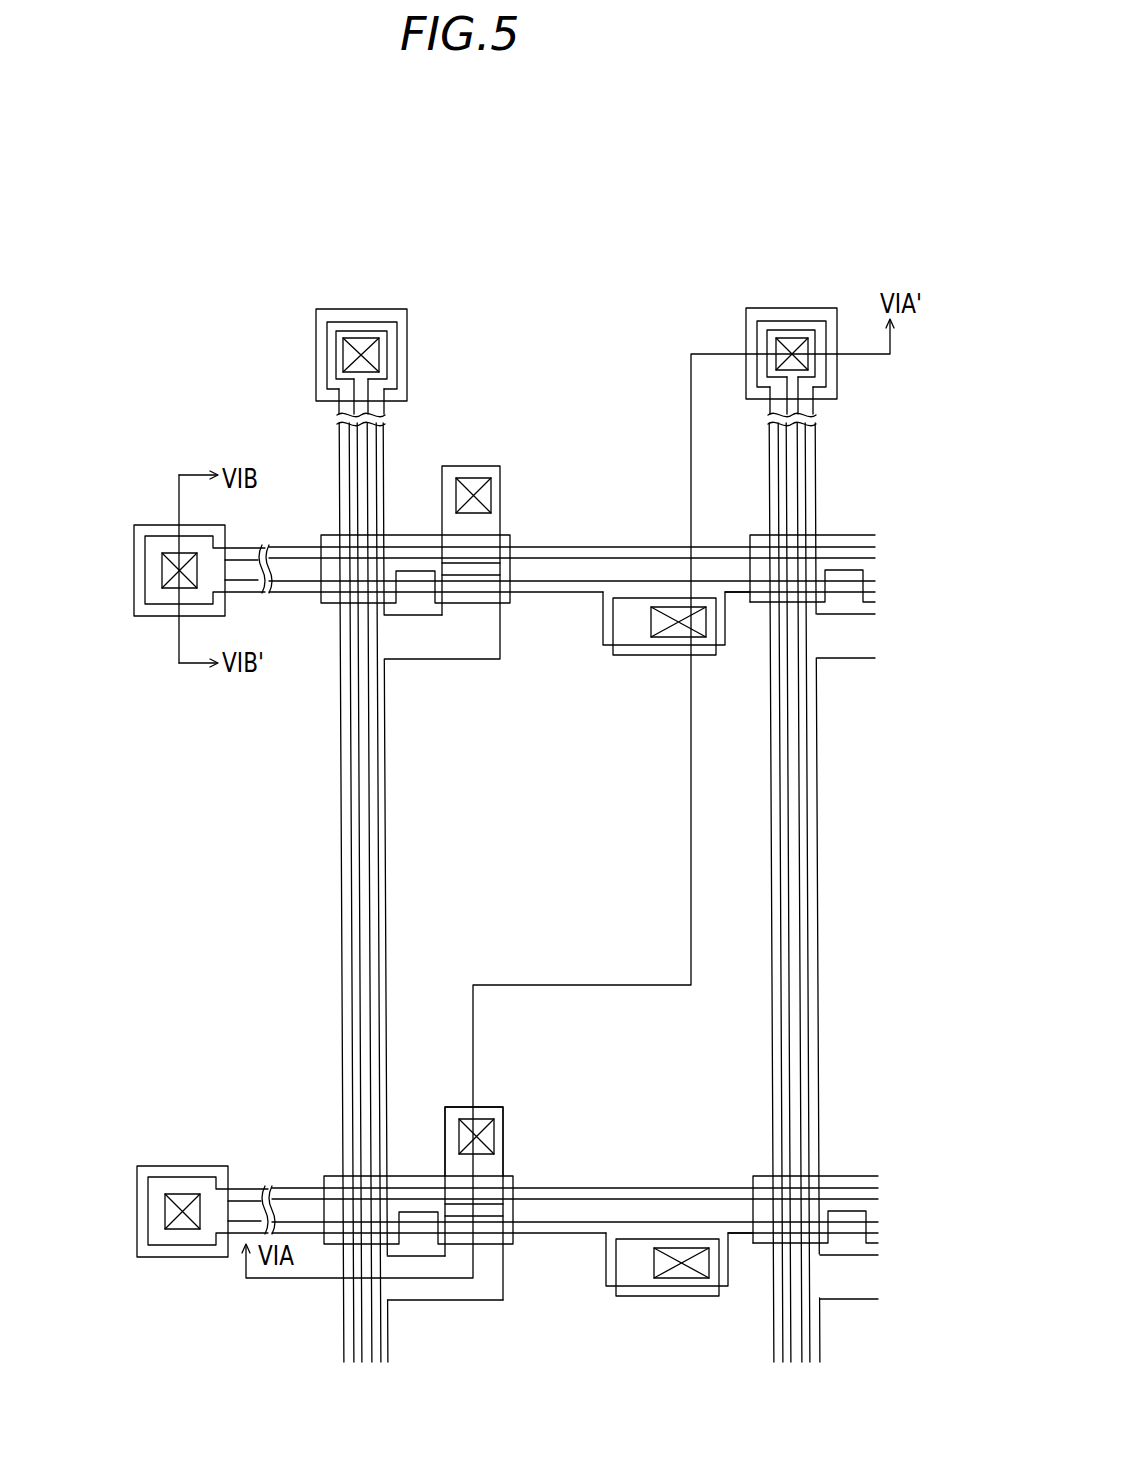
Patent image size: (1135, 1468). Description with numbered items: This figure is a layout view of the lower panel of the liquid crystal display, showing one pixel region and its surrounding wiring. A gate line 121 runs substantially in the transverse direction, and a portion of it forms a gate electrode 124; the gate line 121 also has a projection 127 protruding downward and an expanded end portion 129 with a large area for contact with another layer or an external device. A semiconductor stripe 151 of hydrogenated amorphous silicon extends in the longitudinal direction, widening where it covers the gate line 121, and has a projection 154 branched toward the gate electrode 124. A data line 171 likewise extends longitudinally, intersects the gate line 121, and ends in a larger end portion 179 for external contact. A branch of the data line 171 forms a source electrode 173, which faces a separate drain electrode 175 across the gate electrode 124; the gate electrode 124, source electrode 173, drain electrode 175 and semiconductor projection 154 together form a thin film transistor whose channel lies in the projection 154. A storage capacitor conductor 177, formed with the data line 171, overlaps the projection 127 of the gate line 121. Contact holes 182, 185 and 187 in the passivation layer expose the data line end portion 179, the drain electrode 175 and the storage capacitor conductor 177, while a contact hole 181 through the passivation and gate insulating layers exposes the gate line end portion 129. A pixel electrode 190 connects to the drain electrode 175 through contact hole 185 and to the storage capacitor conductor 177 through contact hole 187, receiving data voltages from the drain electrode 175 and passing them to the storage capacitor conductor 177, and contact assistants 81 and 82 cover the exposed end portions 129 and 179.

The contact assistant 81 is at (160, 525).
The expanded end portion of gate line 129 is at (145, 601).
The contact hole 181 is at (162, 568).
The gate line 121 is at (597, 546).
The gate electrode 124 is at (500, 1208).
The projection of gate line 127 is at (603, 643).
The storage capacitor conductor 177 is at (630, 656).
The contact hole 187 is at (677, 606).
The data line 171 is at (341, 793).
The semiconductor stripe 151 is at (802, 893).
The projection of semiconductor stripe 154 is at (511, 1177).
The source electrode 173 is at (451, 1300).
The drain electrode 175 is at (463, 1108).
The contact hole 185 is at (494, 1130).
The end portion of data line 179 is at (757, 340).
The contact assistant 82 is at (838, 390).
The contact hole 182 is at (782, 337).
The pixel electrode 190 is at (668, 1198).